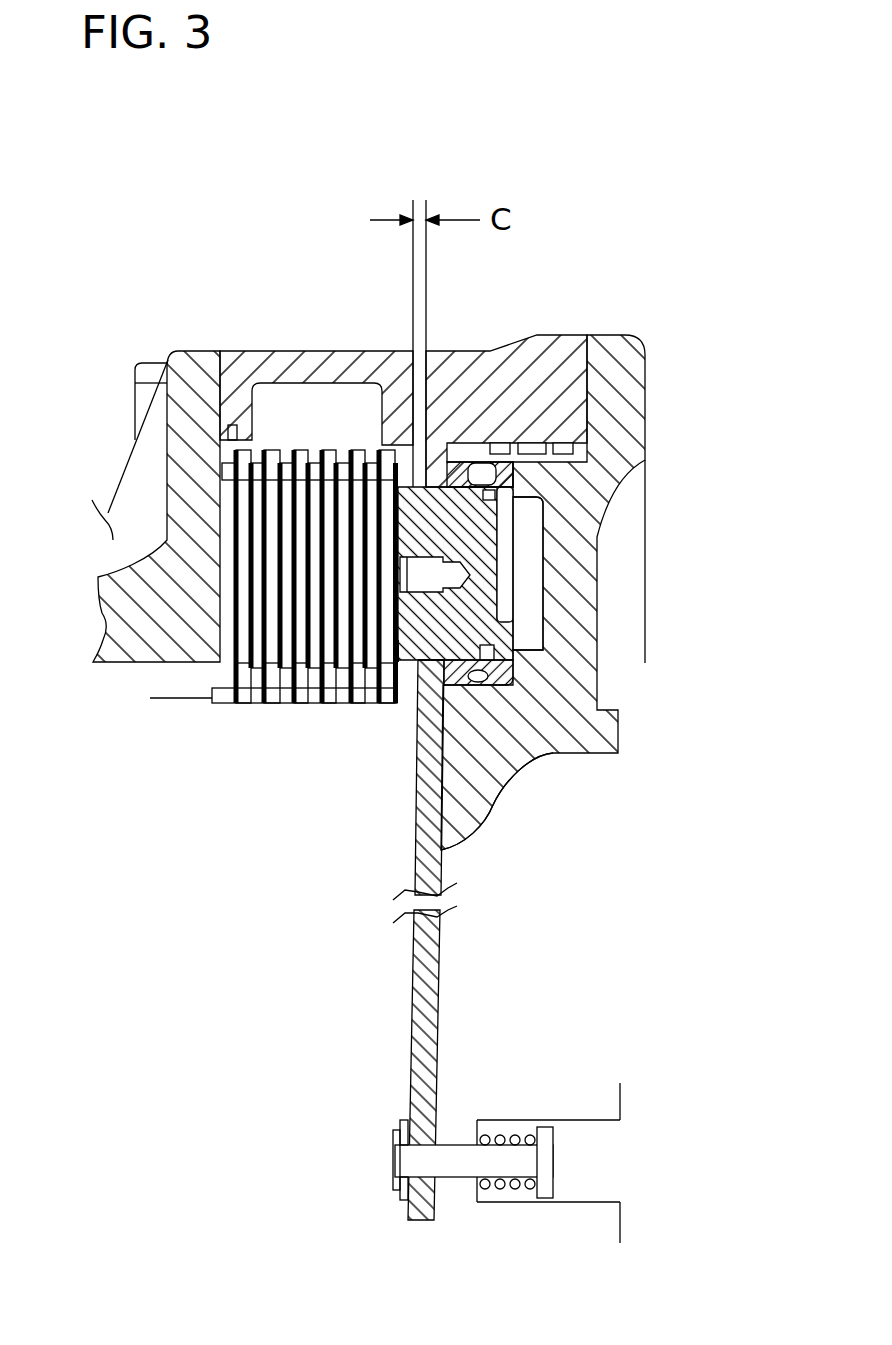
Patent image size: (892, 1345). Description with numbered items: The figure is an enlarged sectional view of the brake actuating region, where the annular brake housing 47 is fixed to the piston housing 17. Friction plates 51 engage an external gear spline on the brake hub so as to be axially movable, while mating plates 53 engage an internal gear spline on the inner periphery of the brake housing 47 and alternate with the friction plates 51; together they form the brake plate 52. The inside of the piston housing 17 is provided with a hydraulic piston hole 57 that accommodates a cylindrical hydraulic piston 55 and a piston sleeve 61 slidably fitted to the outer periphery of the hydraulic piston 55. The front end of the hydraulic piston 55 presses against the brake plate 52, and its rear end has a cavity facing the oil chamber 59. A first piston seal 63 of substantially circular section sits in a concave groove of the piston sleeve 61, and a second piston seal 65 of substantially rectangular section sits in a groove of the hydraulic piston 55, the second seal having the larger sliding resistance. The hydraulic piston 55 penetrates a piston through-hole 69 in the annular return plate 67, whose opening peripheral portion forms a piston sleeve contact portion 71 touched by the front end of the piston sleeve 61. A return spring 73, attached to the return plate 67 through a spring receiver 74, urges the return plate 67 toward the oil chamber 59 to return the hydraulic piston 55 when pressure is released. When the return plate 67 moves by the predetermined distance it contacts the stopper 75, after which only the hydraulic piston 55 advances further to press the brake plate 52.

The piston housing 17 is at (614, 478).
The brake housing 47 is at (566, 336).
The friction plates 51 is at (222, 673).
The brake plate 52 is at (310, 420).
The mating plates 53 is at (272, 450).
The hydraulic piston 55 is at (513, 631).
The hydraulic piston hole 57 is at (547, 520).
The oil chamber 59 is at (533, 573).
The piston sleeve 61 is at (495, 478).
The first piston seal 63 is at (550, 757).
The second piston seal 65 is at (510, 653).
The return plate 67 is at (440, 935).
The piston through-hole 69 is at (416, 662).
The piston sleeve contact portion 71 is at (417, 667).
The return spring 73 is at (510, 1193).
The spring receiver 74 is at (393, 1155).
The stopper 75 is at (396, 447).